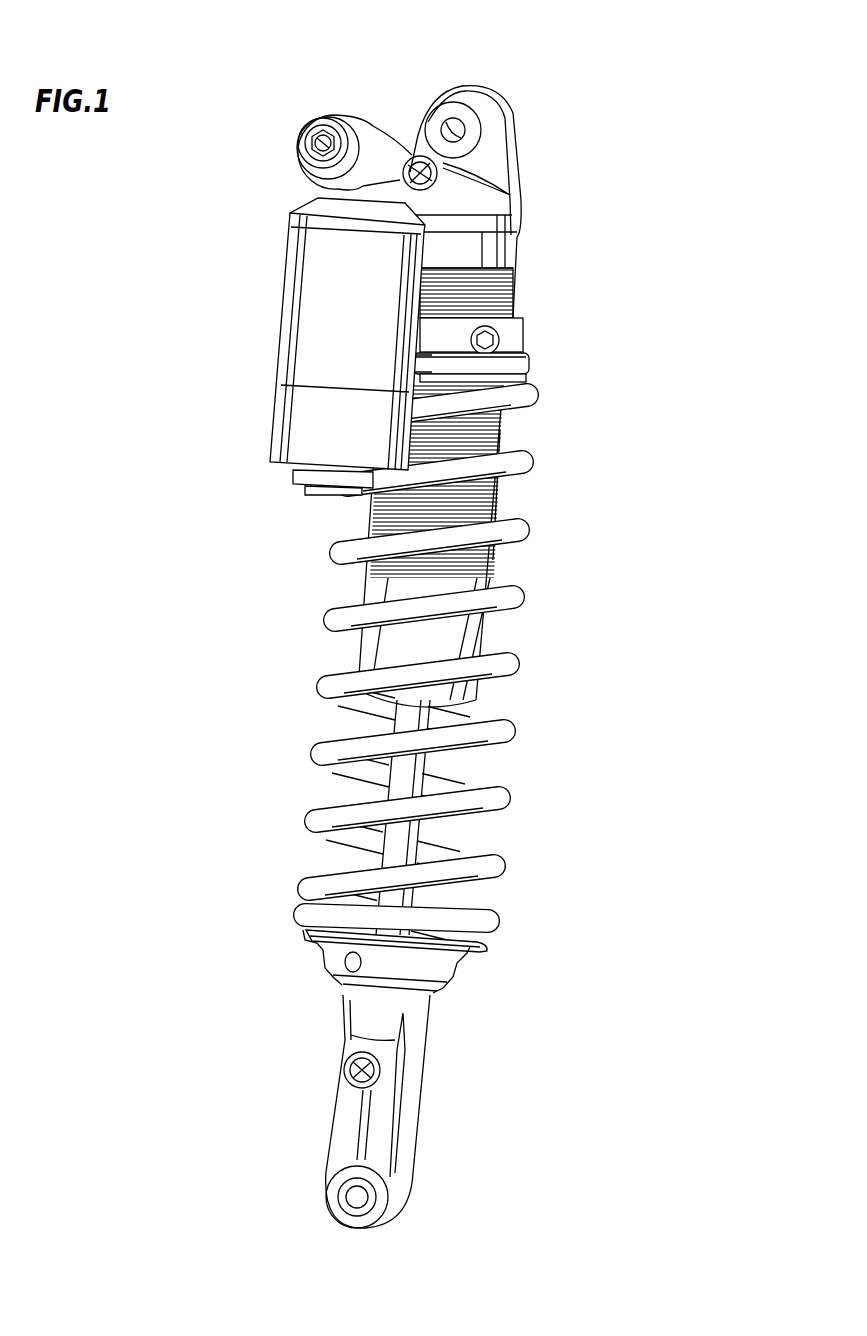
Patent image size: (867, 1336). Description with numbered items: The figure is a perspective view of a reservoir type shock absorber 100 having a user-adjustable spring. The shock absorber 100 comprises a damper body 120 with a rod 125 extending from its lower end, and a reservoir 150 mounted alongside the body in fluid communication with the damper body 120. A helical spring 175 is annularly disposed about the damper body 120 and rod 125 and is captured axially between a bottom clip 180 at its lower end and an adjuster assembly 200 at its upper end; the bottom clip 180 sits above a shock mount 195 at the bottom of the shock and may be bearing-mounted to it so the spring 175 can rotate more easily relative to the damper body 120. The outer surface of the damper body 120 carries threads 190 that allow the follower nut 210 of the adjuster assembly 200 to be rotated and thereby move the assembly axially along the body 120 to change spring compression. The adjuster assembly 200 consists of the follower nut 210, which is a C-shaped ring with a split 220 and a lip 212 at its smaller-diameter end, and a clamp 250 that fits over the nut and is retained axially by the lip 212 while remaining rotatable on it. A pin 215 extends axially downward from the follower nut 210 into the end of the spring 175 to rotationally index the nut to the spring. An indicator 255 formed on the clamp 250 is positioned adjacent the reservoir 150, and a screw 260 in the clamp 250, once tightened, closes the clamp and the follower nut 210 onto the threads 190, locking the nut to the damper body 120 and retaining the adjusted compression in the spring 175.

The shock absorber 100 is at (660, 88).
The damper body 120 is at (505, 424).
The rod 125 is at (370, 700).
The reservoir 150 is at (278, 352).
The helical spring 175 is at (477, 710).
The bottom clip 180 is at (473, 950).
The threads 190 is at (503, 493).
The shock mount 195 is at (387, 1113).
The adjuster assembly 200 is at (494, 344).
The follower nut 210 is at (524, 370).
The lip 212 is at (423, 367).
The pin 215 is at (525, 384).
The split 220 is at (417, 283).
The clamp 250 is at (512, 337).
The indicator 255 is at (250, 290).
The screw 260 is at (470, 340).